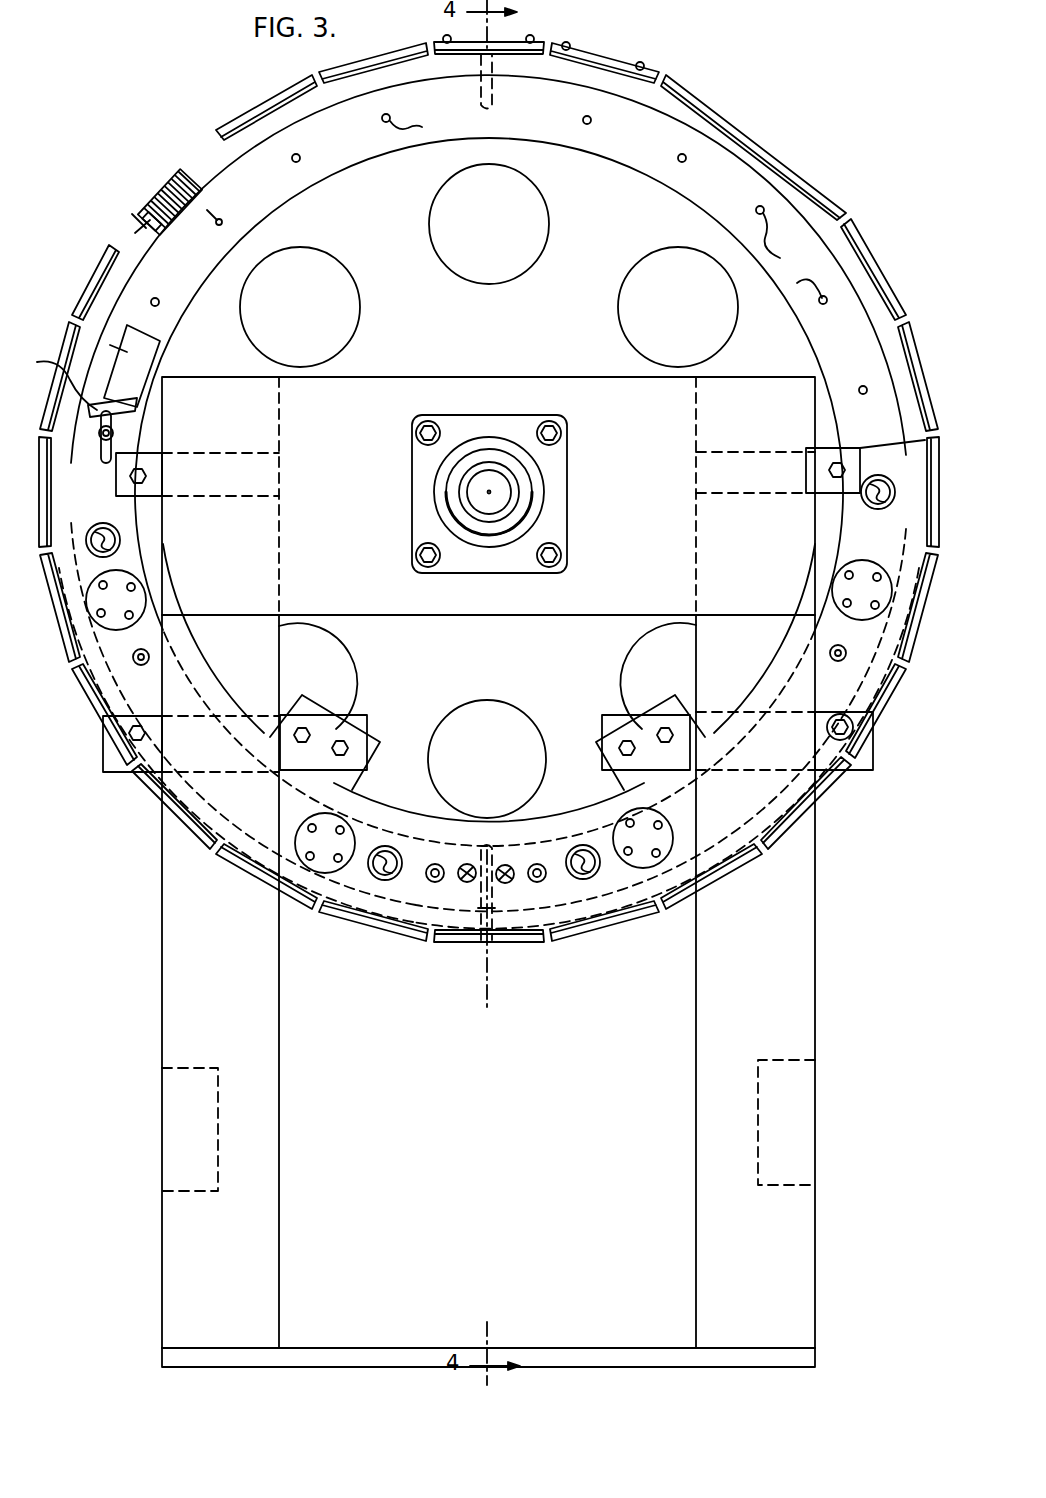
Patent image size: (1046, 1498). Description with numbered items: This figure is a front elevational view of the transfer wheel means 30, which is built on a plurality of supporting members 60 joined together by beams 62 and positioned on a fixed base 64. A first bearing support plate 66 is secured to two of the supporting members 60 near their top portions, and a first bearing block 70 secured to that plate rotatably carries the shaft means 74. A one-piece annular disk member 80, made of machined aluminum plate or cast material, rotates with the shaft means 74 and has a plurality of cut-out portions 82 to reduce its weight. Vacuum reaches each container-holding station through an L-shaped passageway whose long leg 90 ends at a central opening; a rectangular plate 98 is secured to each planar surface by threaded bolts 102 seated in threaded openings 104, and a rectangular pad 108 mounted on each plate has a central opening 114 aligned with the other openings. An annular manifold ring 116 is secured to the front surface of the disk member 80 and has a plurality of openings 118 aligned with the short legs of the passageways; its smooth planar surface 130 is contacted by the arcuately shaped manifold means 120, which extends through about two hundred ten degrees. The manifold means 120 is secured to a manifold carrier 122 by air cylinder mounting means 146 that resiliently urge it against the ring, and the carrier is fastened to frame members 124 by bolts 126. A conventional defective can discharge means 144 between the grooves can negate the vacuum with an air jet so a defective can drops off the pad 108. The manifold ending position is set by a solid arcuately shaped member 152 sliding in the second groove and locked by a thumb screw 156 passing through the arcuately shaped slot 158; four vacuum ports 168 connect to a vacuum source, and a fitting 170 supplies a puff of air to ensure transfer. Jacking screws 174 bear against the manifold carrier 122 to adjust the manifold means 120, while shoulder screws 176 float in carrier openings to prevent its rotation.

The transfer wheel means 30 is at (420, 975).
The supporting members 60 is at (177, 965).
The beams 62 is at (187, 1108).
The fixed base 64 is at (308, 1357).
The first bearing support plate 66 is at (370, 411).
The first bearing block 70 is at (423, 523).
The shaft means 74 is at (495, 491).
The annular disk member 80 is at (690, 213).
The cut-out portions 82 is at (347, 333).
The long leg 90 is at (482, 68).
The rectangular plate 98 is at (165, 200).
The threaded bolts 102 is at (138, 213).
The threaded openings 104 is at (143, 235).
The rectangular pad 108 is at (183, 170).
The central opening 114 is at (488, 950).
The annular manifold ring 116 is at (350, 152).
The openings 118 is at (483, 105).
The manifold means 120 is at (140, 413).
The manifold carrier 122 is at (548, 822).
The frame members 124 is at (150, 497).
The bolts 126 is at (147, 470).
The smooth planar surface 130 is at (558, 117).
The defective can discharge means 144 is at (534, 866).
The air cylinder mounting means 146 is at (128, 595).
The arcuately shaped member 152 is at (160, 342).
The thumb screw 156 is at (113, 435).
The arcuately shaped slot 158 is at (56, 373).
The vacuum ports 168 is at (110, 540).
The fitting 170 is at (150, 377).
The jacking screws 174 is at (130, 733).
The shoulder screws 176 is at (143, 657).